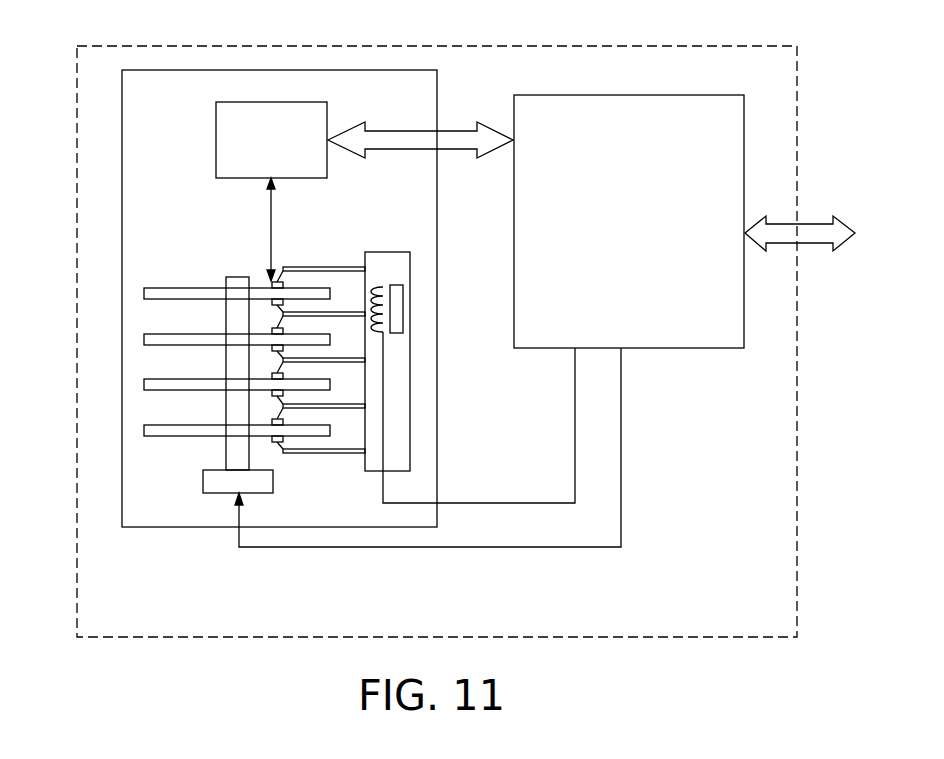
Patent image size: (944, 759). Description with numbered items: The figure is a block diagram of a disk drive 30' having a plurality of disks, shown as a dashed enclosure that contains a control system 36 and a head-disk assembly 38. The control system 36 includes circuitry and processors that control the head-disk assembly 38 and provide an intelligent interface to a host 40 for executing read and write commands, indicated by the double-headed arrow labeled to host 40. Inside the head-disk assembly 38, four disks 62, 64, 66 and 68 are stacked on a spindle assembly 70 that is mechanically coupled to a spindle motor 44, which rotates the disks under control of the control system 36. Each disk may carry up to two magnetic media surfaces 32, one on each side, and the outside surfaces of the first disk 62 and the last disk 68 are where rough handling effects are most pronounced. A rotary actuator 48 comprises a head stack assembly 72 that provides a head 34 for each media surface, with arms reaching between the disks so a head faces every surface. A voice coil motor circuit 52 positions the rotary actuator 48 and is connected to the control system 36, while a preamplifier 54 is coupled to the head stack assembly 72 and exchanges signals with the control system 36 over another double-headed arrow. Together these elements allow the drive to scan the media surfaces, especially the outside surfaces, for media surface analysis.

The disk drive 30' is at (474, 365).
The magnetic media surface 32 is at (206, 360).
The head 34 is at (274, 443).
The control system 36 is at (629, 221).
The head-disk assembly 38 is at (186, 527).
The host 40 is at (808, 277).
The spindle motor 44 is at (203, 482).
The rotary actuator 48 is at (351, 340).
The voice coil motor circuit 52 is at (389, 252).
The preamplifier 54 is at (216, 111).
The first disk 62 is at (144, 290).
The second disk 64 is at (144, 337).
The third disk 66 is at (144, 385).
The fourth disk 68 is at (144, 430).
The spindle assembly 70 is at (246, 277).
The head stack assembly 72 is at (292, 246).